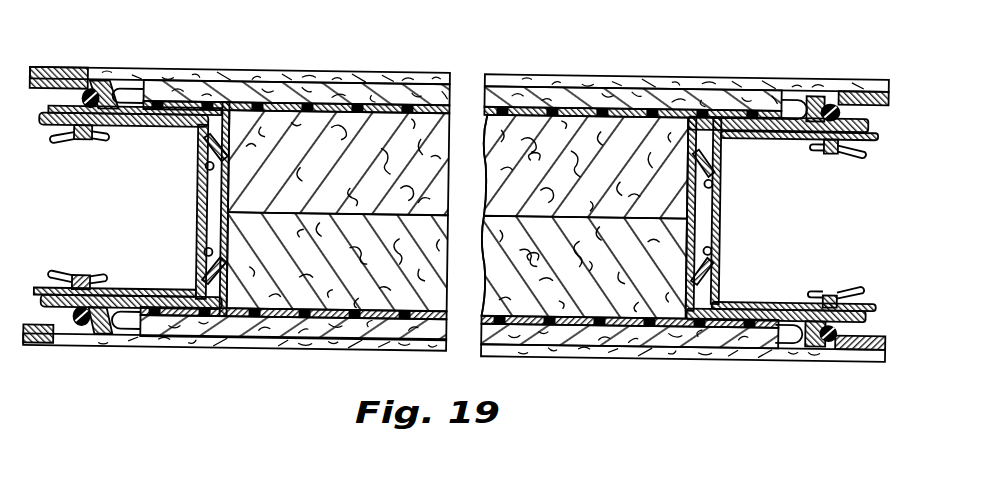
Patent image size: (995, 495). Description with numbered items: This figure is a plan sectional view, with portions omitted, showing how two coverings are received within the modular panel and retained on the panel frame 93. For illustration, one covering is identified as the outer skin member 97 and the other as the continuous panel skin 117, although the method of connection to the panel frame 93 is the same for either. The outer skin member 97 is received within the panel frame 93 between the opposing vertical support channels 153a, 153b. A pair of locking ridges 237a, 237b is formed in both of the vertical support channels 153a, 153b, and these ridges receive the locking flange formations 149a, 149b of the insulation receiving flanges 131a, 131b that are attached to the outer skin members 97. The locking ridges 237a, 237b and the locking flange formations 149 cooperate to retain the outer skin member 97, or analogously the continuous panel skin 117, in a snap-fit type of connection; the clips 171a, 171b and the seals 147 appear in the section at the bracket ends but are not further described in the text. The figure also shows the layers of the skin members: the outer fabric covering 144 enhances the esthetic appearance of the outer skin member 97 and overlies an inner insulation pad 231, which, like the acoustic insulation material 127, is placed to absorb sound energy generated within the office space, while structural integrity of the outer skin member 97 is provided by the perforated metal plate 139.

The panel frame 93 is at (185, 233).
The outer skin member 97 is at (268, 70).
The continuous panel skin 117 is at (266, 357).
The acoustic insulation material 127 is at (505, 140).
The insulation receiving flange 131a is at (133, 90).
The insulation receiving flange 131b is at (781, 128).
The perforated metal plate 139 is at (385, 103).
The outer fabric covering 144 is at (715, 80).
The seal 147 is at (86, 93).
The locking flange formation 149 is at (700, 252).
The locking flange formation 149a is at (228, 195).
The locking flange formation 149b is at (700, 190).
The vertical support channel 153a is at (198, 206).
The vertical support channel 153b is at (722, 213).
The first retaining clip 171a is at (86, 148).
The second retaining clip 171b is at (846, 152).
The inner insulation pad 231 is at (628, 100).
The locking ridge 237a is at (218, 158).
The locking ridge 237b is at (703, 160).